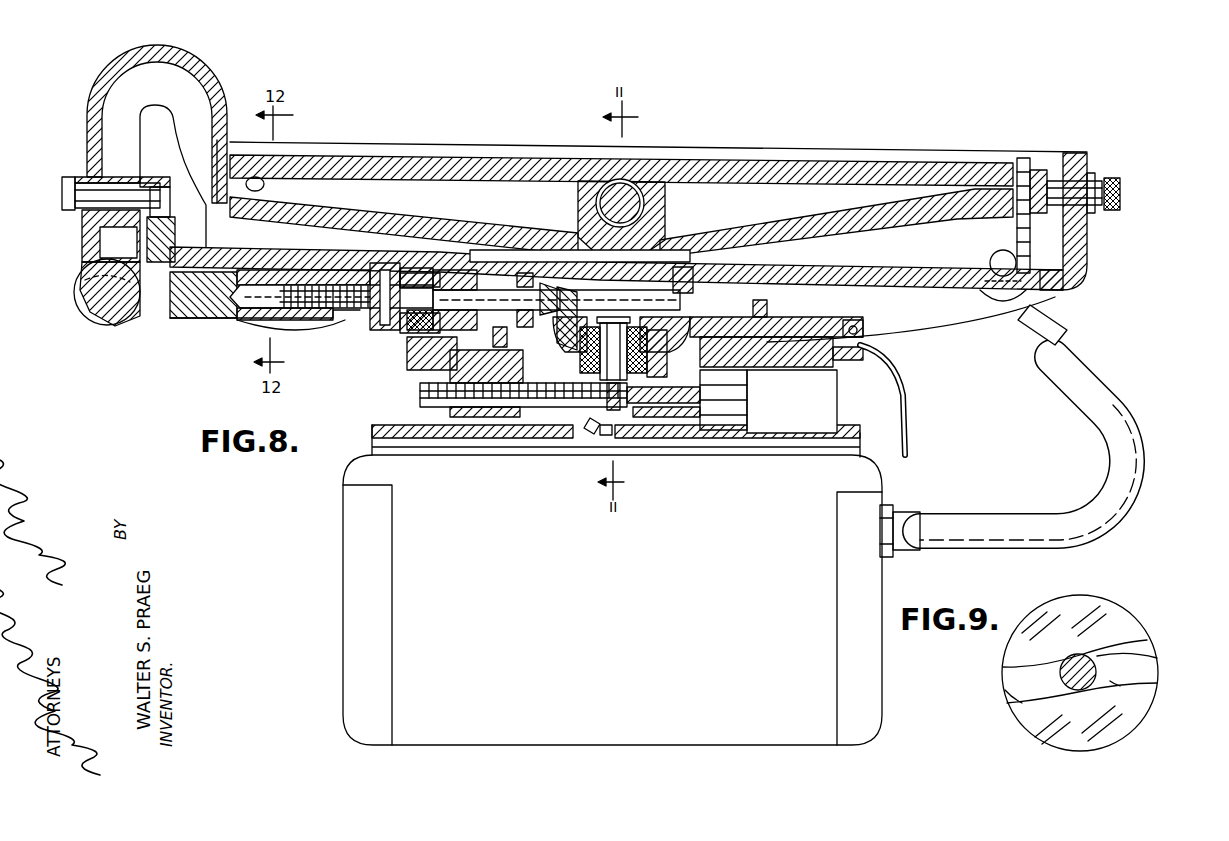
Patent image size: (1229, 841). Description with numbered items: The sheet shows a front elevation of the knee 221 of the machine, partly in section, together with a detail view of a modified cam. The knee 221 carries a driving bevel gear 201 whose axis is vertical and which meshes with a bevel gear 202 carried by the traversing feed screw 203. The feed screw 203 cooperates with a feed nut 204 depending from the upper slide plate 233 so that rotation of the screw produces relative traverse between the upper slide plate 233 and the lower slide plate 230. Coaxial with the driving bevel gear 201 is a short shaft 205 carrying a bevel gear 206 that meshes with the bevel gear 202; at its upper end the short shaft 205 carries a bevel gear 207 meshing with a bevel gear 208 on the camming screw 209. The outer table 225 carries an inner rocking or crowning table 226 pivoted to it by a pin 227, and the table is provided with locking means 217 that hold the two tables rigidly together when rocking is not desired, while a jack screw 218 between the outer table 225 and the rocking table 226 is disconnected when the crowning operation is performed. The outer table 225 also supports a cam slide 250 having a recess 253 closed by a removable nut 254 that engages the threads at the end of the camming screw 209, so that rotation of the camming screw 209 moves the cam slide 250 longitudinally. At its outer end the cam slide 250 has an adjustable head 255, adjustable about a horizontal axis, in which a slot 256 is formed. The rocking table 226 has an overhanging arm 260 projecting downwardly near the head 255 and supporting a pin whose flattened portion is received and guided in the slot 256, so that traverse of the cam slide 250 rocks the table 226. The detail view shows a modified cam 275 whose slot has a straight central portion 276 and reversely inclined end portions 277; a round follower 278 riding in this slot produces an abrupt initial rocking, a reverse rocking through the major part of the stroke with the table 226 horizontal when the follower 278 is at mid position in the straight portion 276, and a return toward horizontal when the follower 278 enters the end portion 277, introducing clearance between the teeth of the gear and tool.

In FIG. 8, the overhanging arm 260 is at (87, 107).
In FIG. 8, the locking means 217 is at (62, 187).
In FIG. 8, the adjustable head 255 is at (84, 298).
In FIG. 8, the slot 256 is at (77, 326).
In FIG. 8, the rocking table 226 is at (862, 151).
In FIG. 8, the pin 227 is at (632, 191).
In FIG. 8, the jack screw 218 is at (1027, 160).
In FIG. 8, the outer table 225 is at (1088, 265).
In FIG. 8, the cam slide 250 is at (192, 319).
In FIG. 8, the recess 253 is at (252, 312).
In FIG. 8, the removable nut 254 is at (346, 322).
In FIG. 8, the camming screw 209 is at (535, 301).
In FIG. 8, the bevel gear 208 is at (534, 303).
In FIG. 8, the bevel gear 207 is at (575, 328).
In FIG. 8, the short shaft 205 is at (618, 324).
In FIG. 8, the bevel gear 206 is at (582, 379).
In FIG. 8, the upper slide plate 233 is at (828, 361).
In FIG. 8, the lower slide plate 230 is at (820, 416).
In FIG. 8, the feed nut 204 is at (470, 414).
In FIG. 8, the traversing feed screw 203 is at (540, 412).
In FIG. 8, the driving bevel gear 201 is at (593, 434).
In FIG. 8, the bevel gear 202 is at (658, 434).
In FIG. 8, the knee 221 is at (343, 563).
In FIG. 9, the cam 275 is at (1123, 611).
In FIG. 9, the reversely inclined end portion 277 is at (1004, 694).
In FIG. 9, the follower 278 is at (1150, 667).
In FIG. 9, the straight portion 276 is at (1115, 686).